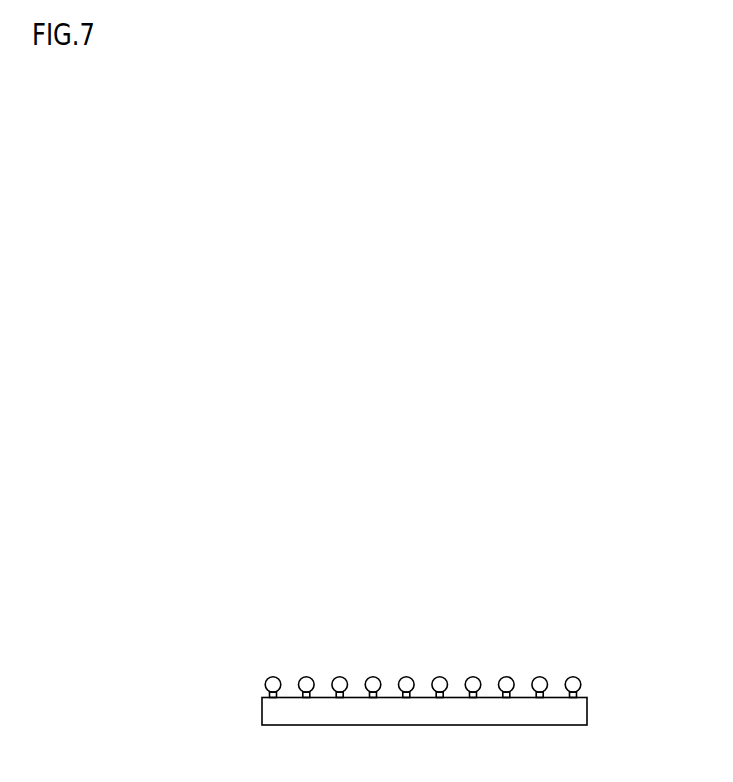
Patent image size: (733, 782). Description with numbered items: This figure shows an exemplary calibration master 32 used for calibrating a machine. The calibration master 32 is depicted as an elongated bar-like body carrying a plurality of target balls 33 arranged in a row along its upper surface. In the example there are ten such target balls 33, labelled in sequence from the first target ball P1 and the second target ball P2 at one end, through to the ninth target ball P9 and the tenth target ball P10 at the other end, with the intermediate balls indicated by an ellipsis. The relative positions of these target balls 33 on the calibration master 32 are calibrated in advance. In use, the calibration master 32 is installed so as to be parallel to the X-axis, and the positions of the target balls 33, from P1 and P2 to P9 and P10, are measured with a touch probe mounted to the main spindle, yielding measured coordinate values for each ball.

The calibration master 32 is at (570, 718).
The target balls 33 is at (470, 677).
The target ball P1 is at (275, 677).
The target ball P2 is at (309, 677).
The target ball P9 is at (542, 677).
The target ball P10 is at (577, 677).